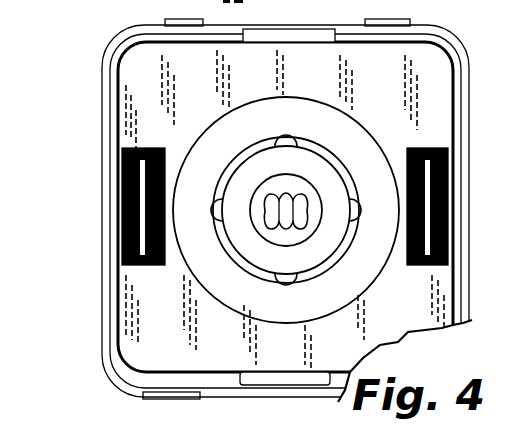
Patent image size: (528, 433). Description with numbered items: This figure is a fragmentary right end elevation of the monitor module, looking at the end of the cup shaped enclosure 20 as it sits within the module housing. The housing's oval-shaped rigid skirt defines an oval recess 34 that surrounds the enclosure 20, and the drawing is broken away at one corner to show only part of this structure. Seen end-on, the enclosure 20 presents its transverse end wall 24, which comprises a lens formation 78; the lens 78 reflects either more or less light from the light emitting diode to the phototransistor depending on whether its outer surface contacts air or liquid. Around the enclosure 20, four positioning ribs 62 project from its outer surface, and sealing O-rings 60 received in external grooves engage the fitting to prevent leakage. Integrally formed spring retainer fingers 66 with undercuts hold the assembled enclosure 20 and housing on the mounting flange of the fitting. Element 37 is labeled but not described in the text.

The cup shaped enclosure 20 is at (442, 68).
The transverse end wall 24 is at (325, 243).
The oval recess 34 is at (518, 214).
The flange 37 is at (520, 312).
The sealing O-rings 60 is at (448, 215).
The positioning ribs 62 is at (287, 137).
The spring retainer fingers 66 is at (122, 181).
The lens formation 78 is at (300, 183).